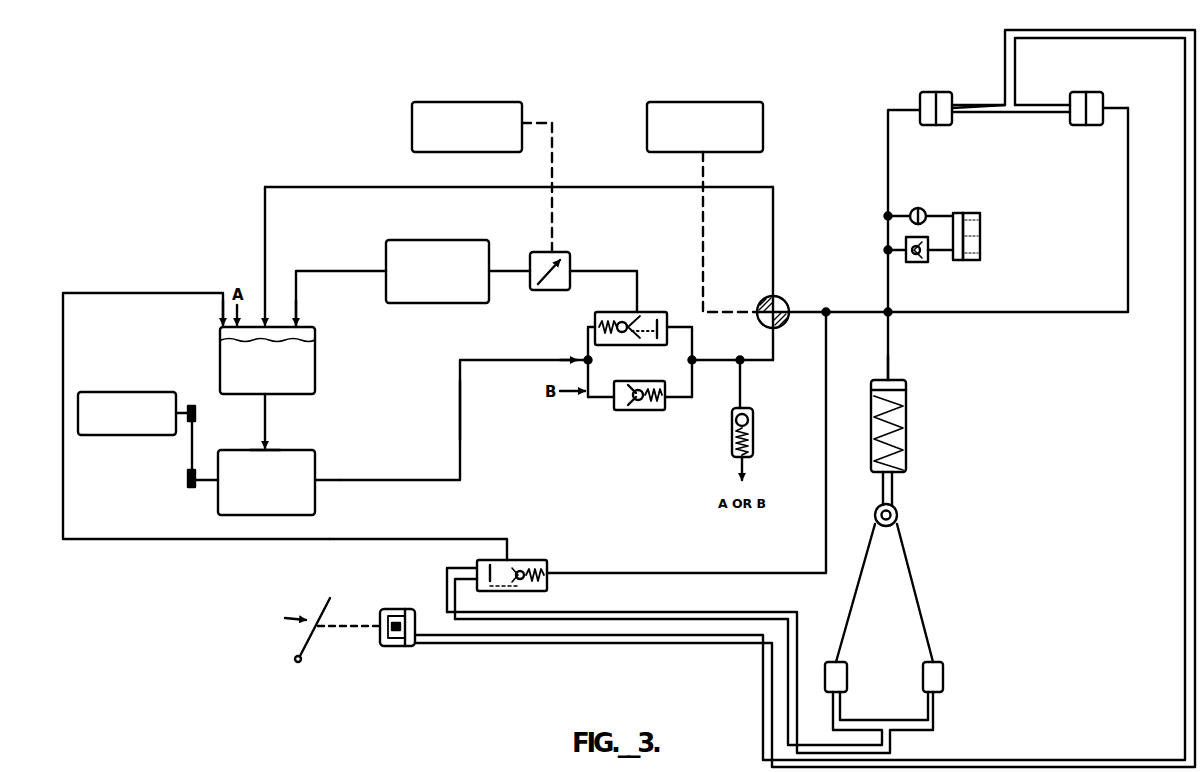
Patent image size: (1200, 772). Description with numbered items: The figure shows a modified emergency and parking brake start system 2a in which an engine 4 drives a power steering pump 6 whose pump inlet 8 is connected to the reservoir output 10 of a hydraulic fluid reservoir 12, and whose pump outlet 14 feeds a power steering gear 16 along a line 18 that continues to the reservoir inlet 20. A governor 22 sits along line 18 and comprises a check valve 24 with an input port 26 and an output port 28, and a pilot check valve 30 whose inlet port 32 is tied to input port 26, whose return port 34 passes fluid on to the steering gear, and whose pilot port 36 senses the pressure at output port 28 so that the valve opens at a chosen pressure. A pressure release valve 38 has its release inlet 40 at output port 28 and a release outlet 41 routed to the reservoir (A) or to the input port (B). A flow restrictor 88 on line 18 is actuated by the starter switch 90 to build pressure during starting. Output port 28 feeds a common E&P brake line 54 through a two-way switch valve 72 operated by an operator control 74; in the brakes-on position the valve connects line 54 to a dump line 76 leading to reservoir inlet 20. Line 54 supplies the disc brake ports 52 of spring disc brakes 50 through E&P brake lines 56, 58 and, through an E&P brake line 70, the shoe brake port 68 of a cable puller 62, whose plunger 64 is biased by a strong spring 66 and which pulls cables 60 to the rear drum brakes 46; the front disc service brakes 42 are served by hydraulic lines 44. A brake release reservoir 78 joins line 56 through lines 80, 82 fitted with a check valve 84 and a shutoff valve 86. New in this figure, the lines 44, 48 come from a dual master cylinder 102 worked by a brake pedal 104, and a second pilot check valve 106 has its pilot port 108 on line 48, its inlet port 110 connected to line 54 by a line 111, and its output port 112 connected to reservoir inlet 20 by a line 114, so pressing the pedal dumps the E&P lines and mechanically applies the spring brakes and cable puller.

The system 2a is at (280, 126).
The engine 4 is at (151, 392).
The power steering pump 6 is at (302, 448).
The pump inlet 8 is at (267, 448).
The reservoir output 10 is at (267, 397).
The hydraulic fluid reservoir 12 is at (318, 356).
The pump outlet 14 is at (318, 479).
The power steering gear 16 is at (473, 240).
The line 18 is at (461, 472).
The reservoir inlet 20 is at (266, 318).
The governor 22 is at (508, 398).
The check valve 24 is at (640, 412).
The input port 26 is at (614, 405).
The output port 28 is at (668, 404).
The pilot check valve 30 is at (623, 312).
The inlet port 32 is at (582, 334).
The return port 34 is at (640, 312).
The pilot port 36 is at (668, 327).
The pressure release valve 38 is at (756, 418).
The release inlet 40 is at (745, 408).
The release outlet 41 is at (746, 464).
The front disc service brakes 42 is at (944, 92).
The service brake hydraulic lines 44 is at (958, 120).
The rear wheel drum brakes 46 is at (922, 676).
The hydraulic lines 48 is at (928, 708).
The spring disc brakes 50 is at (927, 92).
The disc brake port 52 is at (916, 108).
The common E&P brake line 54 is at (831, 308).
The E&P brake line 56 is at (888, 165).
The E&P brake line 58 is at (1128, 240).
The cables 60 is at (910, 600).
The cable puller 62 is at (906, 434).
The plunger 64 is at (906, 390).
The spring 66 is at (906, 467).
The shoe brake port 68 is at (893, 378).
The E&P brake line 70 is at (890, 344).
The two-way switch valve 72 is at (784, 300).
The operator control 74 is at (756, 102).
The dump line 76 is at (773, 237).
The brake release reservoir 78 is at (977, 212).
The line 80 is at (940, 252).
The line 82 is at (942, 212).
The check valve 84 is at (907, 264).
The shutoff valve 86 is at (918, 206).
The flow restrictor 88 is at (570, 256).
The starter switch 90 is at (512, 102).
The dual master cylinder 102 is at (405, 648).
The brake pedal 104 is at (322, 652).
The second pilot check valve 106 is at (536, 593).
The pilot port 108 is at (472, 566).
The inlet port 110 is at (544, 572).
The line 111 is at (652, 573).
The output port 112 is at (510, 562).
The line 114 is at (362, 539).